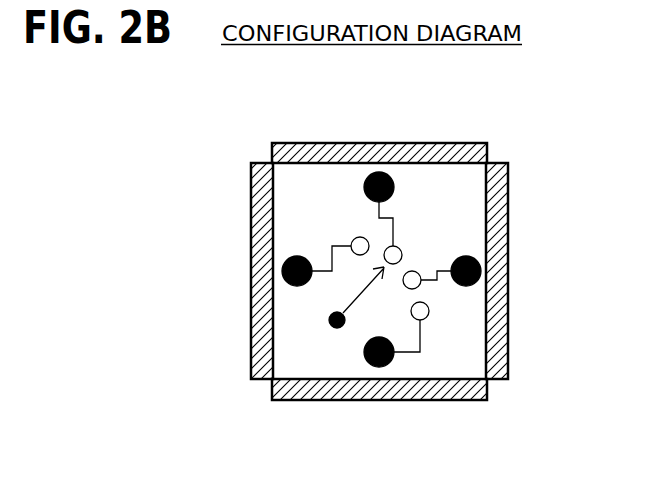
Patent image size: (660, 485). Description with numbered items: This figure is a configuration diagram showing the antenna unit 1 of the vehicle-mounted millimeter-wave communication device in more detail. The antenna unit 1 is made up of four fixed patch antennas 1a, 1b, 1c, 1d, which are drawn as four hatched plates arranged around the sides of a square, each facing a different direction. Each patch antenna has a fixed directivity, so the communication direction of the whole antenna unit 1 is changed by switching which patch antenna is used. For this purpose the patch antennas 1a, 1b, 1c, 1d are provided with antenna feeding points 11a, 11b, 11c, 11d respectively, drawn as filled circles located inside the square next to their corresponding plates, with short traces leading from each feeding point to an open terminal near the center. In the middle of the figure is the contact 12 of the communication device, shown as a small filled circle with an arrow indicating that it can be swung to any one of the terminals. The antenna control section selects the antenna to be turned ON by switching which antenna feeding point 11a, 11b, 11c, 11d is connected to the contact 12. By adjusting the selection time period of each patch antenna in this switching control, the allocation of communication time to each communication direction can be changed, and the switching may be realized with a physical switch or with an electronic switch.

The antenna unit 1 is at (577, 146).
The patch antenna 1a is at (251, 200).
The patch antenna 1b is at (428, 143).
The patch antenna 1c is at (508, 207).
The patch antenna 1d is at (449, 400).
The antenna feeding point 11a is at (282, 266).
The antenna feeding point 11b is at (372, 174).
The antenna feeding point 11c is at (479, 259).
The antenna feeding point 11d is at (386, 365).
The contact of the communication device 12 is at (329, 321).